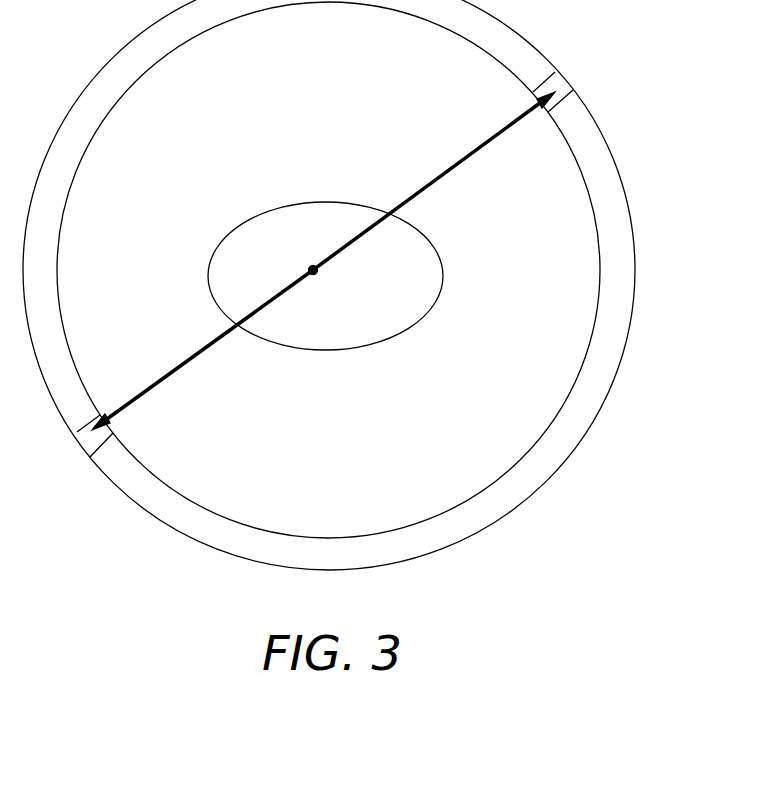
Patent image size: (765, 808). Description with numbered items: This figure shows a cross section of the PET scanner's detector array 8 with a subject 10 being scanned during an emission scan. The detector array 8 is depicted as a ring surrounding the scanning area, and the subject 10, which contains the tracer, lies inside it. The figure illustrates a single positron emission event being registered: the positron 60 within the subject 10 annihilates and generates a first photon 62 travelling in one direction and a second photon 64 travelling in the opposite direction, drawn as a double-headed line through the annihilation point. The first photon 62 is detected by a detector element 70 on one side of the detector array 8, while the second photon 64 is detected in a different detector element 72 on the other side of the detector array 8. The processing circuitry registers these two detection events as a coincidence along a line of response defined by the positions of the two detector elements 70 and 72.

The detector array 8 is at (633, 247).
The subject 10 is at (398, 335).
The positron 60 is at (316, 273).
The first photon 62 is at (463, 160).
The second photon 64 is at (173, 373).
The detector element 70 is at (560, 82).
The detector element 72 is at (85, 443).